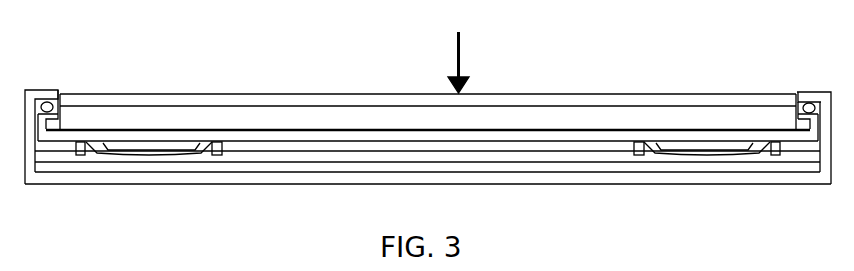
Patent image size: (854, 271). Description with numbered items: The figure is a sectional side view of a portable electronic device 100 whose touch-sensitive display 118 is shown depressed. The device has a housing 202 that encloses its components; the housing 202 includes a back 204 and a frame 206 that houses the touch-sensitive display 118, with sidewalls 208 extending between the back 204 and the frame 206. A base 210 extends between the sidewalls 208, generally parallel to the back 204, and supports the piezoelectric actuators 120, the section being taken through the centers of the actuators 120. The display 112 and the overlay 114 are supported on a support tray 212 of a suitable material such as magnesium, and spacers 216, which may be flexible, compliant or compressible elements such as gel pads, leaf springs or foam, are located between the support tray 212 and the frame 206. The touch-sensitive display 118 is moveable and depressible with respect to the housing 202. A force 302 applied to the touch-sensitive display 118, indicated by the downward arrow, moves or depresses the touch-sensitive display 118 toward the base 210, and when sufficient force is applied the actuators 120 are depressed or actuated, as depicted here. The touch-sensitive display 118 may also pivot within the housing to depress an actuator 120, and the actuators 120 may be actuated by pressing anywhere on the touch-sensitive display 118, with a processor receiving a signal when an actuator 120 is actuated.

The portable electronic device 100 is at (822, 44).
The display 112 is at (300, 110).
The overlay 114 is at (372, 98).
The touch-sensitive display 118 is at (252, 95).
The piezoelectric actuator 120 is at (165, 142).
The housing 202 is at (605, 182).
The back 204 is at (537, 178).
The frame 206 is at (37, 90).
The sidewall 208 is at (825, 163).
The base 210 is at (453, 158).
The support tray 212 is at (388, 133).
The spacer 216 is at (805, 93).
The force 302 is at (460, 63).